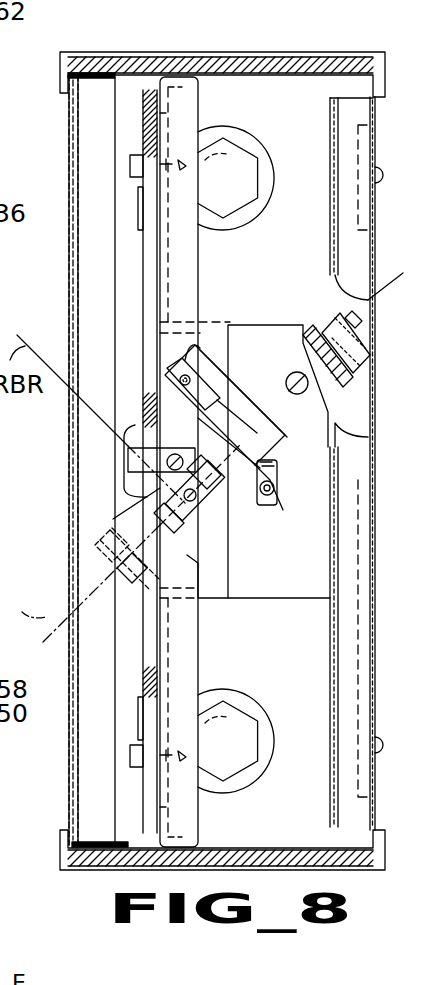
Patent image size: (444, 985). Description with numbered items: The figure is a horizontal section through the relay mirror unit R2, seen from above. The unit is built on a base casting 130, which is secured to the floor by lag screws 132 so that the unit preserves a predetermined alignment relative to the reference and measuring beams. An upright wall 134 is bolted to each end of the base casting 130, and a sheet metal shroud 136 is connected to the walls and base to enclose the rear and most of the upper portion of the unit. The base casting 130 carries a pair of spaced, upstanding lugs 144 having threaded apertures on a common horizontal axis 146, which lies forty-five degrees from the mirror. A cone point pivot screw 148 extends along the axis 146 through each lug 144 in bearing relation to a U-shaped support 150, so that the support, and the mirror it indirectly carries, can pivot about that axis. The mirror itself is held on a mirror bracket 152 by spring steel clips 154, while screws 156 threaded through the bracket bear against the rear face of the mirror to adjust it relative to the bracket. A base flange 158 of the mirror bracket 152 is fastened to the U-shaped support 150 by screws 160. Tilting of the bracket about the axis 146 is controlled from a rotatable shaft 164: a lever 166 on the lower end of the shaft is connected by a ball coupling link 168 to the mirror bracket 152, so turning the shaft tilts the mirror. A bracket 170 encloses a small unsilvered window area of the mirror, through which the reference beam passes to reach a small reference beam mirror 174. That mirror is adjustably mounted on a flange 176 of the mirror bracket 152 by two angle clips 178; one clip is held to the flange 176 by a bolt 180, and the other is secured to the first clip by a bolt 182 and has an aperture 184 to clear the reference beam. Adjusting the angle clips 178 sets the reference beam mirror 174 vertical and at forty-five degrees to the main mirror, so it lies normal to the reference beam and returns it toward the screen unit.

The base casting 130 is at (302, 668).
The lag screws 132 is at (237, 152).
The upright wall 134 is at (236, 80).
The sheet metal shroud 136 is at (330, 112).
The upstanding lugs 144 is at (323, 327).
The horizontal axis 146 is at (86, 570).
The cone point pivot screw 148 is at (355, 330).
The U-shaped support 150 is at (348, 403).
The mirror bracket 152 is at (190, 625).
The spring steel clips 154 is at (130, 163).
The screws 156 is at (228, 459).
The base flange 158 is at (320, 587).
The screws 160 is at (300, 378).
The rotatable shaft 164 is at (278, 460).
The lever 166 is at (284, 493).
The ball coupling link 168 is at (175, 366).
The bracket 170 is at (128, 458).
The reference beam mirror 174 is at (150, 543).
The flange 176 is at (208, 330).
The angle clips 178 is at (246, 470).
The bolt 180 is at (220, 325).
The bolt 182 is at (240, 407).
The aperture 184 is at (180, 511).
The relay mirror unit R2 is at (258, 52).